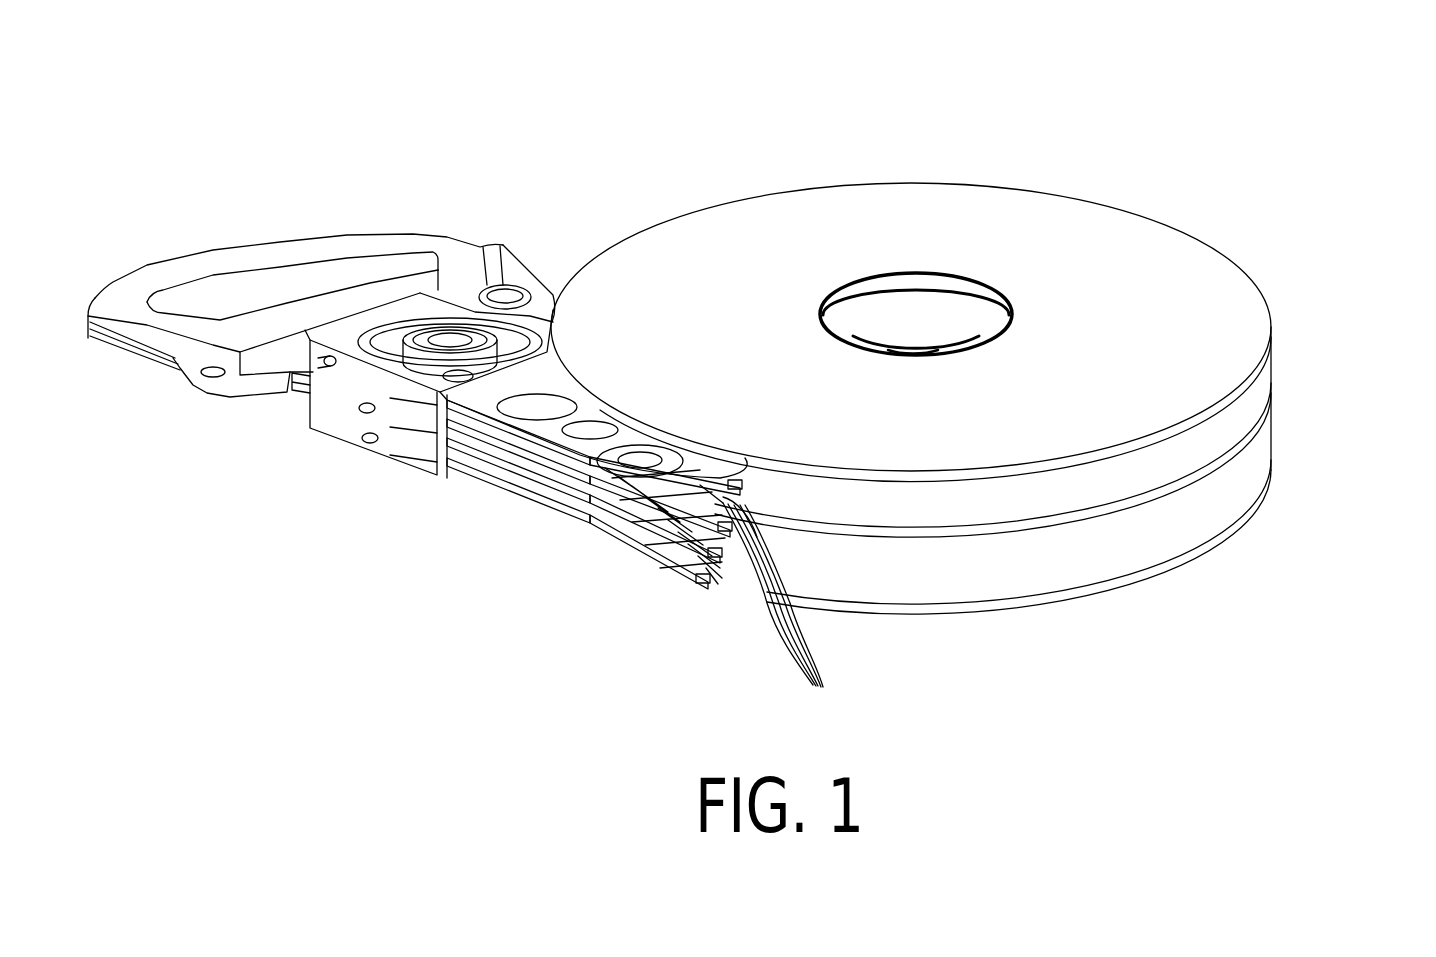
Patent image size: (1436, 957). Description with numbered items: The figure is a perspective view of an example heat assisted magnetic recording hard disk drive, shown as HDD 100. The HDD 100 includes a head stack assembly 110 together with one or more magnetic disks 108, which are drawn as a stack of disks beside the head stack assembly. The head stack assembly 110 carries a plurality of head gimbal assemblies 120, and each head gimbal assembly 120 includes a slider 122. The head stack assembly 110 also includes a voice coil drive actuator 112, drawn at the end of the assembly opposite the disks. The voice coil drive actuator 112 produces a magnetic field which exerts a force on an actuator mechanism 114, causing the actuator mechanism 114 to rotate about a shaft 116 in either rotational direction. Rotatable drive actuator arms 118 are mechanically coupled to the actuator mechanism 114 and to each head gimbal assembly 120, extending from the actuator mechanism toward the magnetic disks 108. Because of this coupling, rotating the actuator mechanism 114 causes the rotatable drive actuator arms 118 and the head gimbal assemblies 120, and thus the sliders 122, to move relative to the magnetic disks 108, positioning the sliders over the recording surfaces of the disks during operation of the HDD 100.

The HDD 100 is at (1278, 122).
The magnetic disks 108 is at (1086, 191).
The head stack assembly 110 is at (584, 617).
The voice coil drive actuator 112 is at (244, 236).
The actuator mechanism 114 is at (547, 250).
The shaft 116 is at (457, 348).
The rotatable drive actuator arms 118 is at (474, 472).
The head gimbal assemblies 120 is at (741, 480).
The slider 122 is at (792, 591).